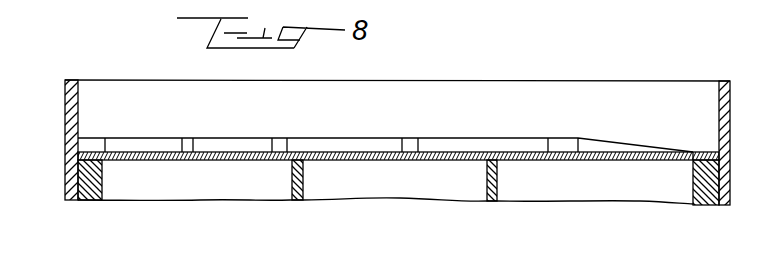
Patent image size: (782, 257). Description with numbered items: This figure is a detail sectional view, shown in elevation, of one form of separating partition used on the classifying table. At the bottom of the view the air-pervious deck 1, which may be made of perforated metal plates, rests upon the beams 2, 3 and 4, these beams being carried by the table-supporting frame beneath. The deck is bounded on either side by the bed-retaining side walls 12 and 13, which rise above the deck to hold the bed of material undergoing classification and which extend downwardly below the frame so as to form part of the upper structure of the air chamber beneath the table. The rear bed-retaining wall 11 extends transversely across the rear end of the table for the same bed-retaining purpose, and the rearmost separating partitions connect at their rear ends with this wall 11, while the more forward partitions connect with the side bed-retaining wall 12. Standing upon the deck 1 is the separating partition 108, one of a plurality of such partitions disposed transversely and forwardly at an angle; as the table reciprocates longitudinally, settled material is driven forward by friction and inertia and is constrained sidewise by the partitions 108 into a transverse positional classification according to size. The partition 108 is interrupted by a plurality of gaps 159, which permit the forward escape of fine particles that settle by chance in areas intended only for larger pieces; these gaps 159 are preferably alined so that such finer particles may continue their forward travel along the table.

The air-pervious deck 1 is at (465, 155).
The beam 2 is at (96, 185).
The beam 3 is at (300, 185).
The beam 4 is at (704, 187).
The rear bed-retaining wall 11 is at (546, 96).
The bed-retaining side wall 12 is at (71, 103).
The bed-retaining side wall 13 is at (723, 114).
The separating partition 108 is at (357, 142).
The gap 159 is at (278, 148).